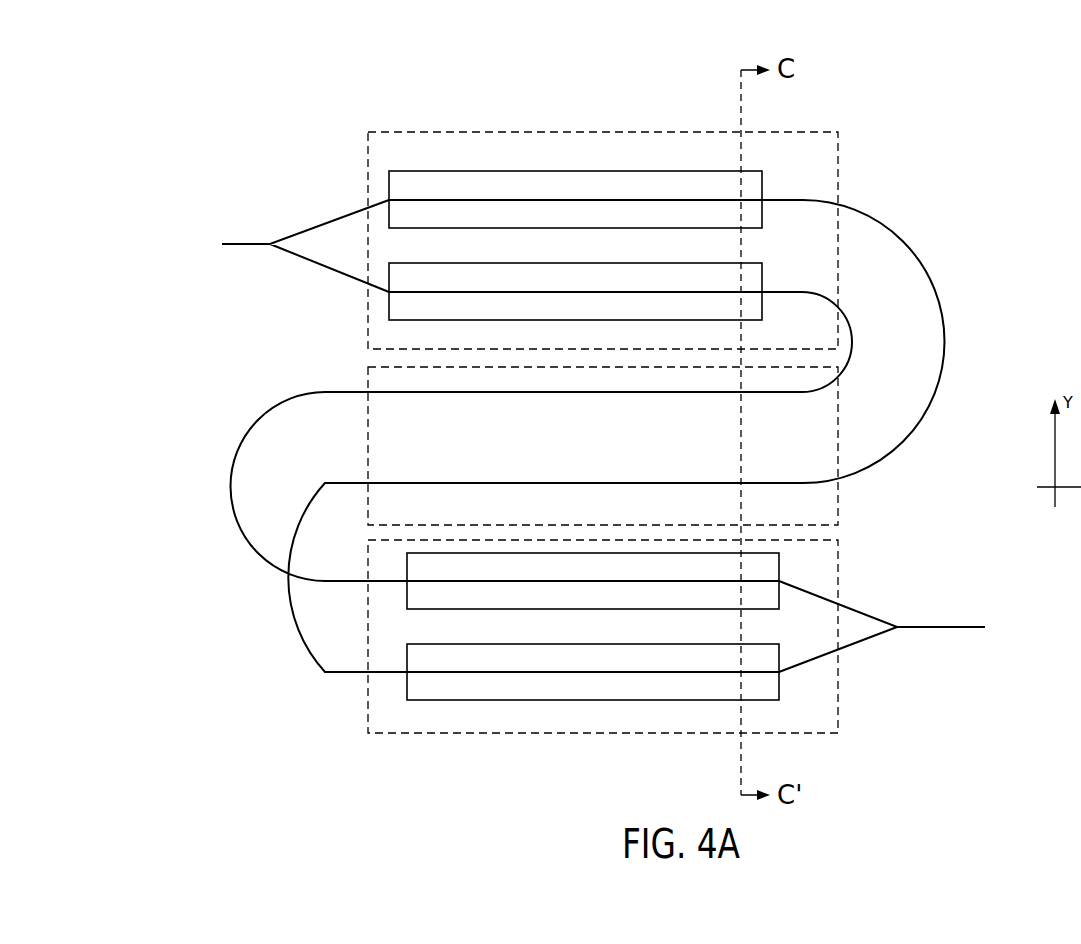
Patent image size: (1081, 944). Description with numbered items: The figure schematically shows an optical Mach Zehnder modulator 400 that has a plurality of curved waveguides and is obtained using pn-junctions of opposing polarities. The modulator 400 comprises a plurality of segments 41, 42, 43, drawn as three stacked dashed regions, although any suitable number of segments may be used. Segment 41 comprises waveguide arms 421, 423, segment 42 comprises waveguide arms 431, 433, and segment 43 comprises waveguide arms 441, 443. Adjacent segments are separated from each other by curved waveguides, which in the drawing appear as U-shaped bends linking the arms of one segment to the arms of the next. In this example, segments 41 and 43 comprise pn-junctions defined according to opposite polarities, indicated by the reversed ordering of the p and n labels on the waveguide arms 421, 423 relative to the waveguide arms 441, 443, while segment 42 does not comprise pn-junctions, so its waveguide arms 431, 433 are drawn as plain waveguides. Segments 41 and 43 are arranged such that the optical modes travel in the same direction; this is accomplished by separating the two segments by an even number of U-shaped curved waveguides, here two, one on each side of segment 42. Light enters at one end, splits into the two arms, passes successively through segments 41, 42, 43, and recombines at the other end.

The optical Mach Zehnder modulator 400 is at (936, 99).
The segment 41 is at (843, 151).
The segment 42 is at (845, 499).
The segment 43 is at (843, 695).
The waveguide arm 421 is at (462, 200).
The waveguide arm 423 is at (487, 292).
The waveguide arm 431 is at (508, 392).
The waveguide arm 433 is at (588, 483).
The waveguide arm 441 is at (523, 582).
The waveguide arm 443 is at (490, 672).